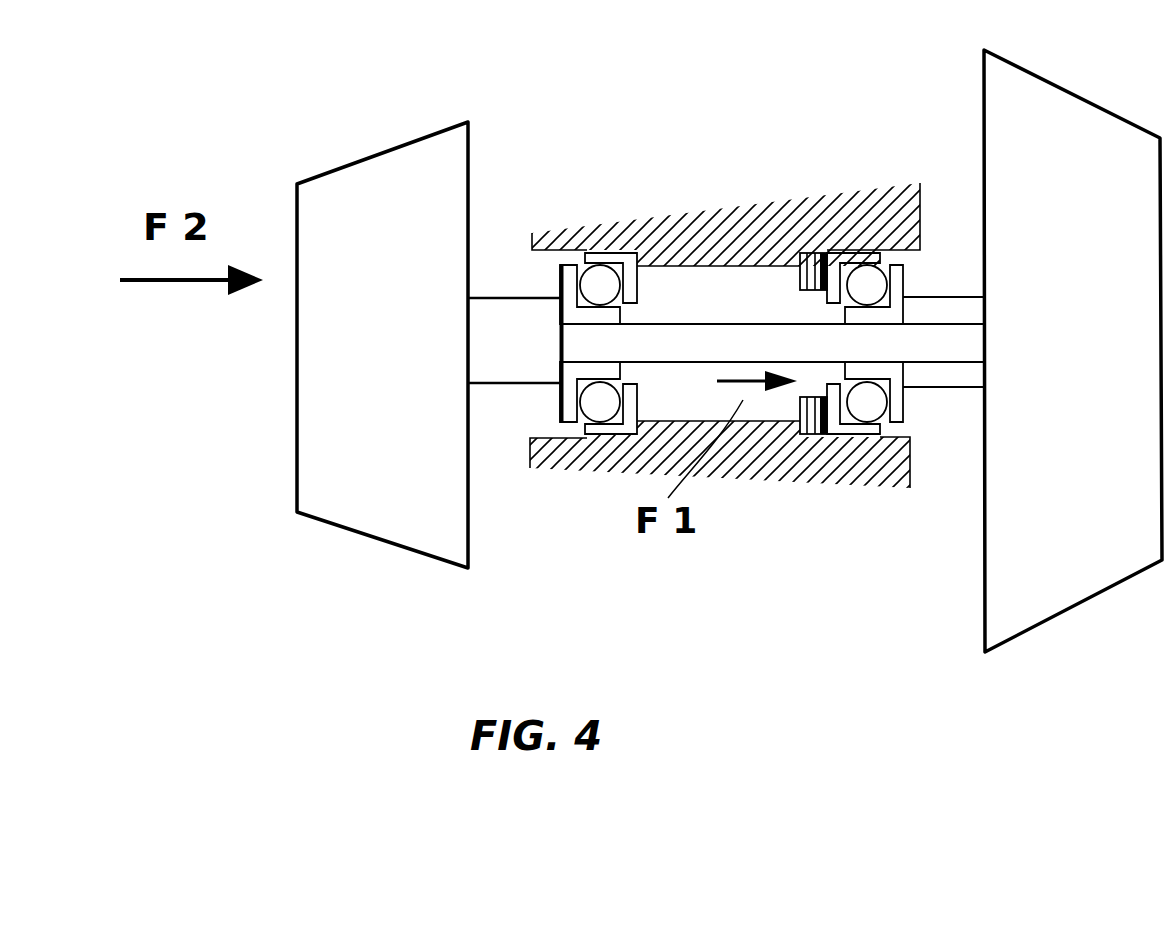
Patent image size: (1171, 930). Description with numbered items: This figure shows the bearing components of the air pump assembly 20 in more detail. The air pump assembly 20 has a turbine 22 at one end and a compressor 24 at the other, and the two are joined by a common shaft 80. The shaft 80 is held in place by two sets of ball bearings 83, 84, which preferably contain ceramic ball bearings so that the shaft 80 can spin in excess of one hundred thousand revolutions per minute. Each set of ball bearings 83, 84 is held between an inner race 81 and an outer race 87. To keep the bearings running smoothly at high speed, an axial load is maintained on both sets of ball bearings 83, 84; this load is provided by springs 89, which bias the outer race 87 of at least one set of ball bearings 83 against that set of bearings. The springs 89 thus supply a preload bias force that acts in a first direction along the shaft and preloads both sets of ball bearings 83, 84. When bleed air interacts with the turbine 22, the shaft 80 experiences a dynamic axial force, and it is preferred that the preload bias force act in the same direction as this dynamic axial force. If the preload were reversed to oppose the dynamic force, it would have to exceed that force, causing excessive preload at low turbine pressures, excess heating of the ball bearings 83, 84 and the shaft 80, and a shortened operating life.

The air pump assembly 20 is at (608, 108).
The turbine 22 is at (360, 168).
The compressor 24 is at (1115, 118).
The shaft 80 is at (592, 342).
The inner race 81 is at (560, 402).
The ball bearings 83 is at (863, 283).
The ball bearings 84 is at (604, 282).
The outer race 87 is at (857, 434).
The springs 89 is at (802, 410).